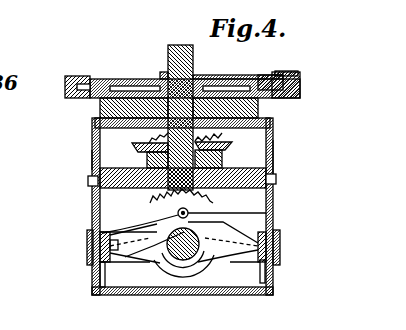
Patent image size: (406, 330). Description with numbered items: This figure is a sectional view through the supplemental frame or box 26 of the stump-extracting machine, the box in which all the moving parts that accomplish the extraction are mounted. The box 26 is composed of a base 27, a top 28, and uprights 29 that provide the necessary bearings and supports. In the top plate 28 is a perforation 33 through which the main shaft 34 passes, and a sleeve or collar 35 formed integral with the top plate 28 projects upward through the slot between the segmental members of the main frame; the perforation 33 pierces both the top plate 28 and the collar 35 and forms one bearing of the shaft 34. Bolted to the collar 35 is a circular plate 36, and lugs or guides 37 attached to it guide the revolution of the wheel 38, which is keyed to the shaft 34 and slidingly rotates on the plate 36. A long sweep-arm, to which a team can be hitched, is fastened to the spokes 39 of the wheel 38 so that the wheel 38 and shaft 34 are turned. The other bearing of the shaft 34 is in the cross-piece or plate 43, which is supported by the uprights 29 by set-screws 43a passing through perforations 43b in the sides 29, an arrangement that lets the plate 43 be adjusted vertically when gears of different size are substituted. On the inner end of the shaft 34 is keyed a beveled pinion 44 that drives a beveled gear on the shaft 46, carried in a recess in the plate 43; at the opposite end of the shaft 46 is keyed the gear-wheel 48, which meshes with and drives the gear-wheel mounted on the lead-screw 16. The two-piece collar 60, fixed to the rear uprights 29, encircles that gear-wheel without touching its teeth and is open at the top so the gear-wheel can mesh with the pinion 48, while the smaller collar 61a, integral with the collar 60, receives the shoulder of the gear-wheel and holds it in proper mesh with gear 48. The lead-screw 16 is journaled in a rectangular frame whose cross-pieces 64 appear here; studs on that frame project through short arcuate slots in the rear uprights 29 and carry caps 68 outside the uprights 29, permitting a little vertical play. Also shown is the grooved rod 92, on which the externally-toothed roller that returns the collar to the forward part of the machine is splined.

The lead-screw 16 is at (173, 238).
The supplemental frame or box 26 is at (270, 137).
The base 27 is at (273, 292).
The top 28 is at (96, 120).
The uprights 29 is at (271, 158).
The perforation 33 is at (158, 82).
The main shaft 34 is at (194, 56).
The sleeve or collar 35 is at (258, 108).
The circular plate 36 is at (300, 83).
The lugs or guides 37 is at (285, 73).
The wheel 38 is at (262, 78).
The spokes 39 is at (132, 80).
The cross-piece or plate 43 is at (276, 178).
The set-screws 43a is at (88, 181).
The perforations 43b is at (90, 160).
The beveled pinion 44 is at (223, 141).
The shaft 46 is at (138, 153).
The gear-wheel 48 is at (205, 192).
The collar 60 is at (143, 263).
The collar of smaller diameter 61a is at (193, 280).
The cross-pieces 64 is at (171, 236).
The cap 68 is at (278, 237).
The rod 92 is at (266, 215).